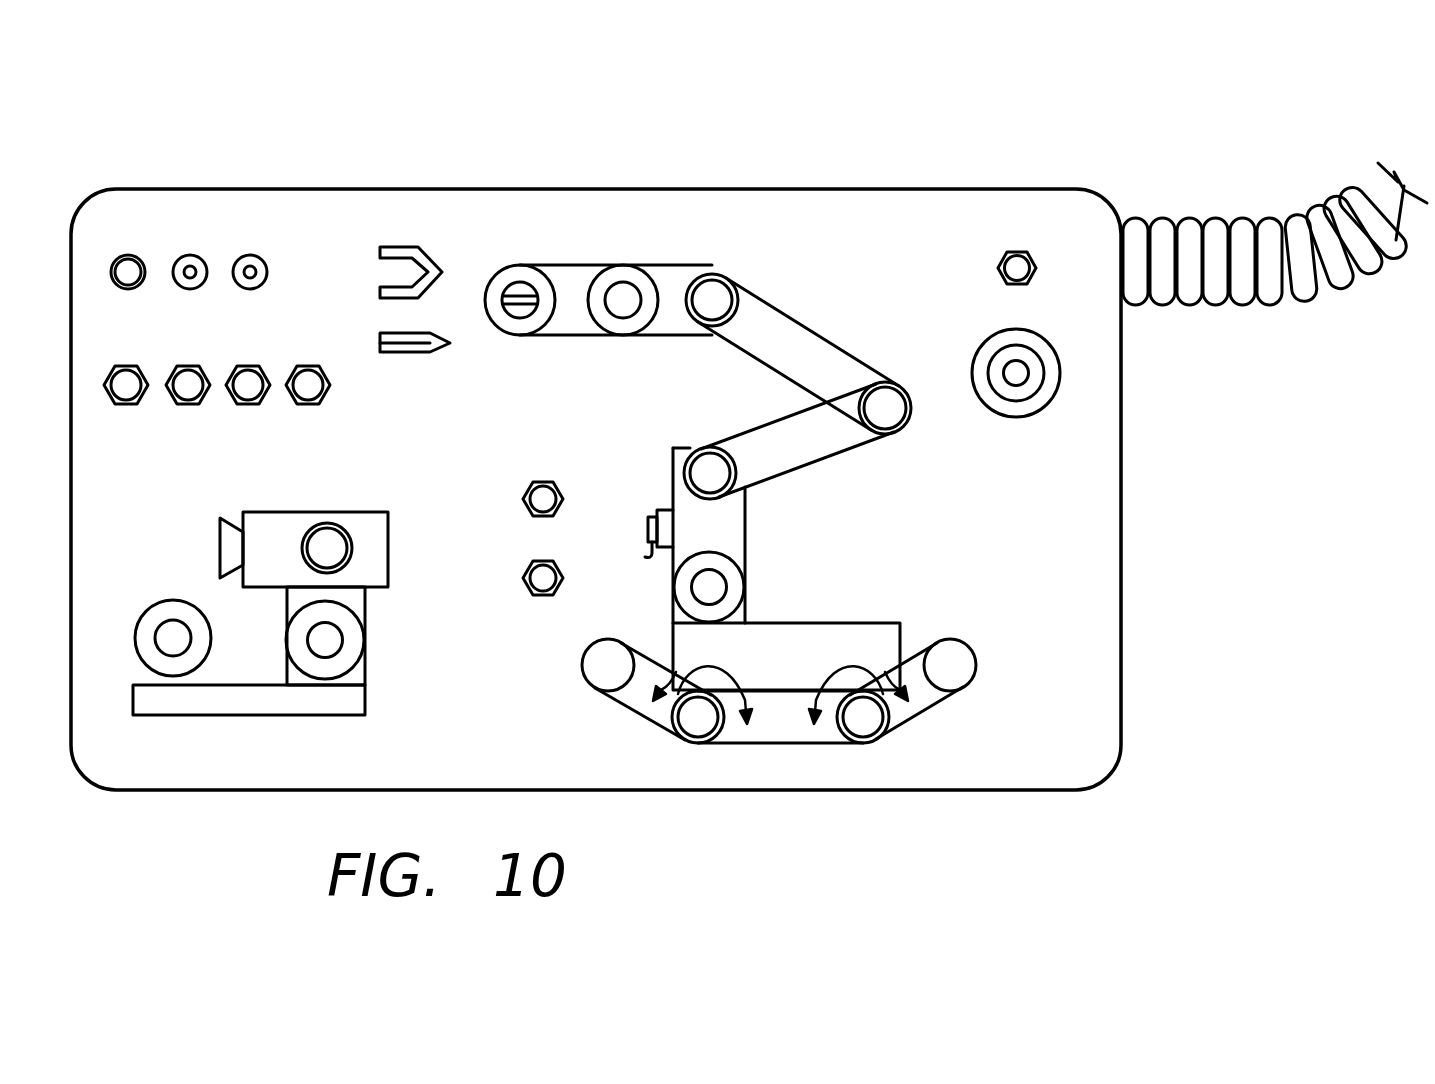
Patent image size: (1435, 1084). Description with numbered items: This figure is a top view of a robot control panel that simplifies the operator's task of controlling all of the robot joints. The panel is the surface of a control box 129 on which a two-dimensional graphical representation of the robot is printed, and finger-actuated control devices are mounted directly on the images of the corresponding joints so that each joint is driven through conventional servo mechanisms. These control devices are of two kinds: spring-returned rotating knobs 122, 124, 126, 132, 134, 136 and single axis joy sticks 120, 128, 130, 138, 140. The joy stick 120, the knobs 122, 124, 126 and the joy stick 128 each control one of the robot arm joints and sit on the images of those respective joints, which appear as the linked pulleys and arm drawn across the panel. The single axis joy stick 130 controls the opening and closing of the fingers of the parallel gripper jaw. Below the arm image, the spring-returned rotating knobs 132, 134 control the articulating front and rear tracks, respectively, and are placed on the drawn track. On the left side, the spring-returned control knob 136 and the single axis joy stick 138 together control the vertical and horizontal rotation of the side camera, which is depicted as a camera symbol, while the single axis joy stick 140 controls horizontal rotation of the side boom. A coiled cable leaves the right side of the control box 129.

The single axis joy stick 120 is at (720, 587).
The spring-returned rotating knob 122 is at (713, 463).
The spring-returned rotating knob 124 is at (897, 413).
The spring-returned rotating knob 126 is at (717, 295).
The single axis joy stick 128 is at (622, 293).
The control box 129 is at (1010, 190).
The single axis joy stick 130 is at (522, 293).
The spring-returned rotating knob 132 is at (698, 727).
The spring-returned rotating knob 134 is at (862, 727).
The spring-returned control knob 136 is at (325, 538).
The single axis joy stick 138 is at (338, 647).
The single axis joy stick 140 is at (165, 637).